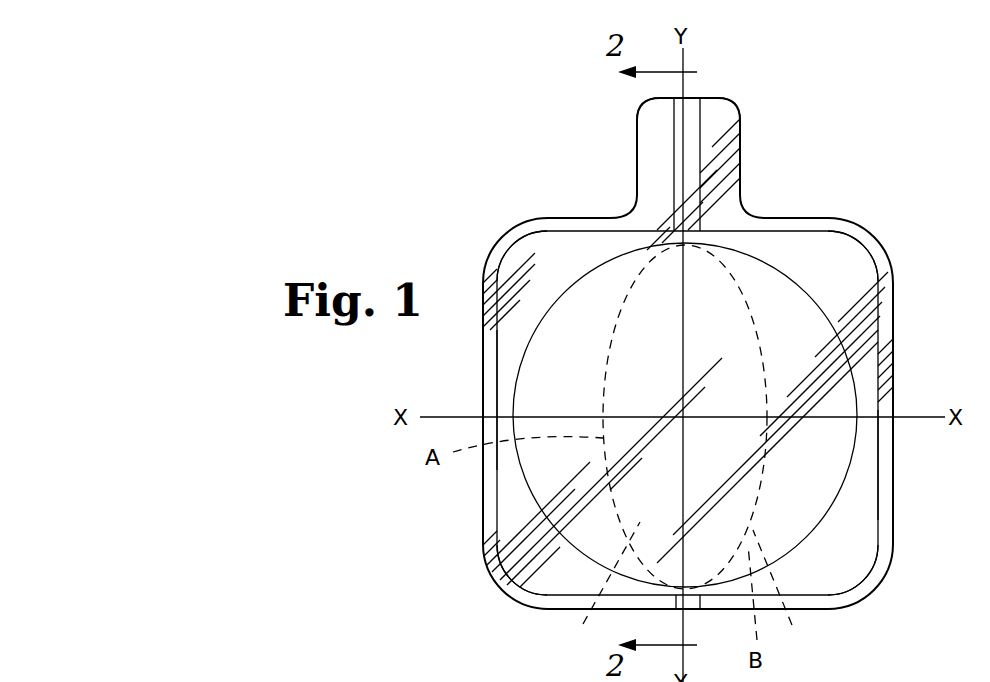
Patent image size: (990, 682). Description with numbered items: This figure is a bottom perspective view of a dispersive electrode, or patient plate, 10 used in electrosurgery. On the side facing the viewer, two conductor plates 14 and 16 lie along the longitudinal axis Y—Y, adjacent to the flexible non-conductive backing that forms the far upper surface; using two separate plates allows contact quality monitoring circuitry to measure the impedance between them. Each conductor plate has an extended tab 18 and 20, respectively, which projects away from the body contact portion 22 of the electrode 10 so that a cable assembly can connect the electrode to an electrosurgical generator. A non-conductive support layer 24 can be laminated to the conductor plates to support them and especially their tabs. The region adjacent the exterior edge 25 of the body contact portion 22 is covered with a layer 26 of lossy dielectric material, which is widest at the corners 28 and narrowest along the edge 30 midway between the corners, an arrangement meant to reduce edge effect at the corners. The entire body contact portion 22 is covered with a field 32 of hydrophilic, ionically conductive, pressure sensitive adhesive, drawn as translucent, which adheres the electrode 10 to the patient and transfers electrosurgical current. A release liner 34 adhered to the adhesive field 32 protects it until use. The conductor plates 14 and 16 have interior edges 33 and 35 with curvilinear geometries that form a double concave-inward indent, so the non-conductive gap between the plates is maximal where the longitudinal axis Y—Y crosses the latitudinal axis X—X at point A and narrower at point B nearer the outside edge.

The dispersive electrode 10 is at (469, 146).
The conductor plate 14 is at (590, 315).
The conductor plate 16 is at (770, 302).
The extended tab 18 is at (650, 121).
The extended tab 20 is at (728, 122).
The body contact portion 22 is at (903, 312).
The non-conductive support layer 24 is at (694, 107).
The exterior edge 25 is at (895, 465).
The layer of lossy dielectric material 26 is at (838, 265).
The corners 28 is at (498, 243).
The edge 30 is at (483, 392).
The field of hydrophilic, ionically conductive, pressure sensitive adhesive 32 is at (488, 508).
The interior edge 33 is at (600, 586).
The release liner 34 is at (857, 570).
The interior edge 35 is at (778, 597).